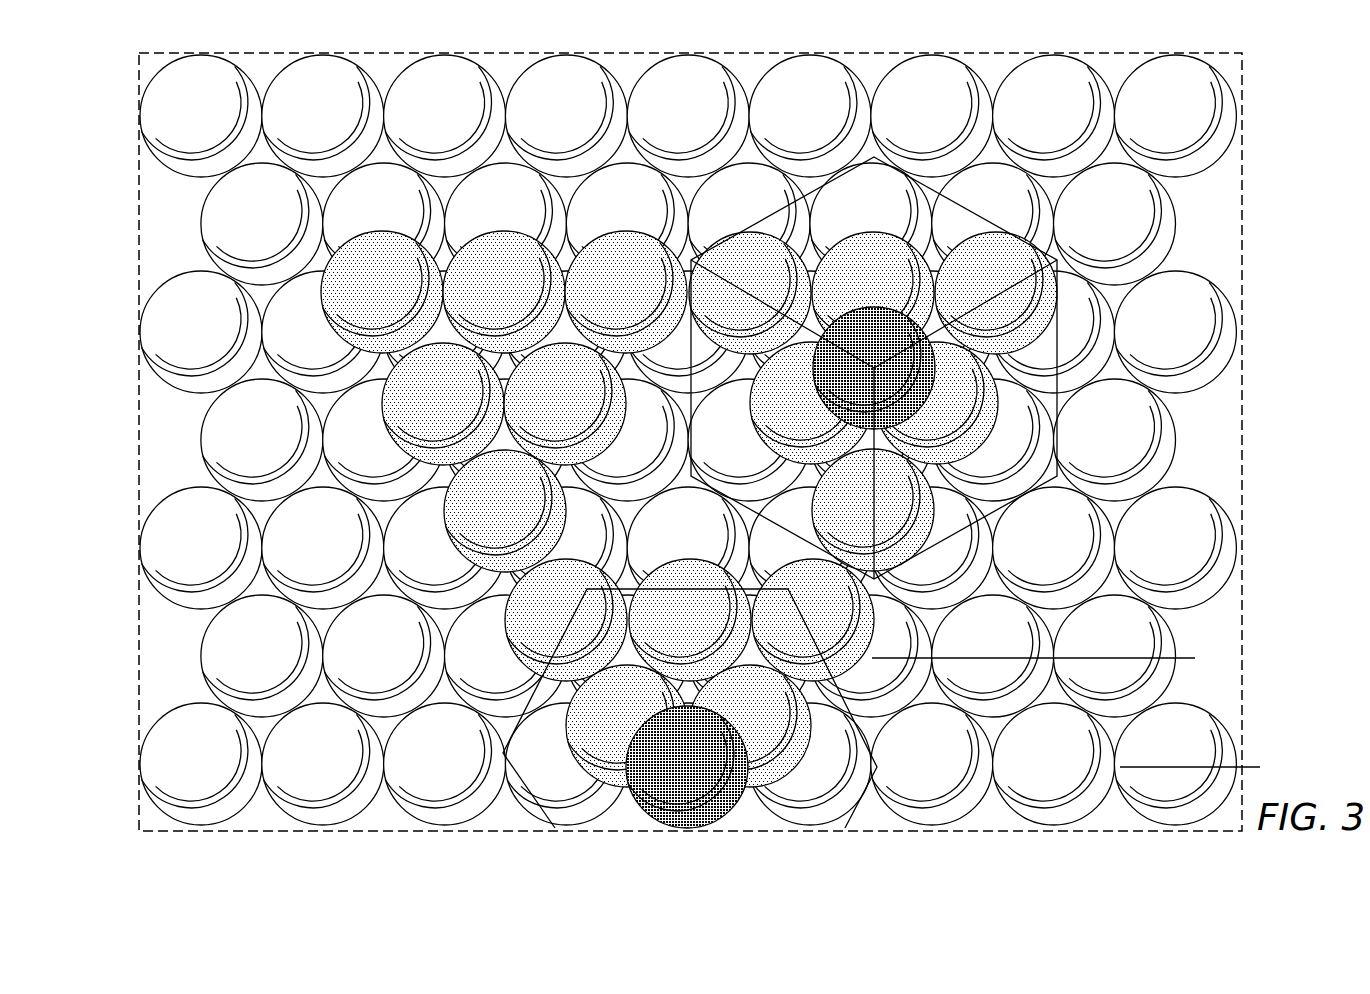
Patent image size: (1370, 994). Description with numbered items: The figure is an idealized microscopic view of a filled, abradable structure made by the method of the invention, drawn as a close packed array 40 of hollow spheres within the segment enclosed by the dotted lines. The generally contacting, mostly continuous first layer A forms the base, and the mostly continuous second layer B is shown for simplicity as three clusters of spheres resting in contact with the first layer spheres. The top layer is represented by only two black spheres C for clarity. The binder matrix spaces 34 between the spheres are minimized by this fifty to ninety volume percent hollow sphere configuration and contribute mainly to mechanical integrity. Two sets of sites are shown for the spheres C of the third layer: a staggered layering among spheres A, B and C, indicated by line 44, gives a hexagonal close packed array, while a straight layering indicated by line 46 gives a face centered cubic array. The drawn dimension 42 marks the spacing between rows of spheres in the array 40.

The matrix spaces 34 is at (233, 707).
The close packed array 40 is at (669, 37).
The row spacing 42 is at (1175, 767).
The line showing staggered layering 44 is at (592, 727).
The line showing straight layering 46 is at (757, 413).
The first layer spheres A is at (1145, 82).
The second layer spheres B is at (480, 513).
The third layer spheres C is at (874, 368).